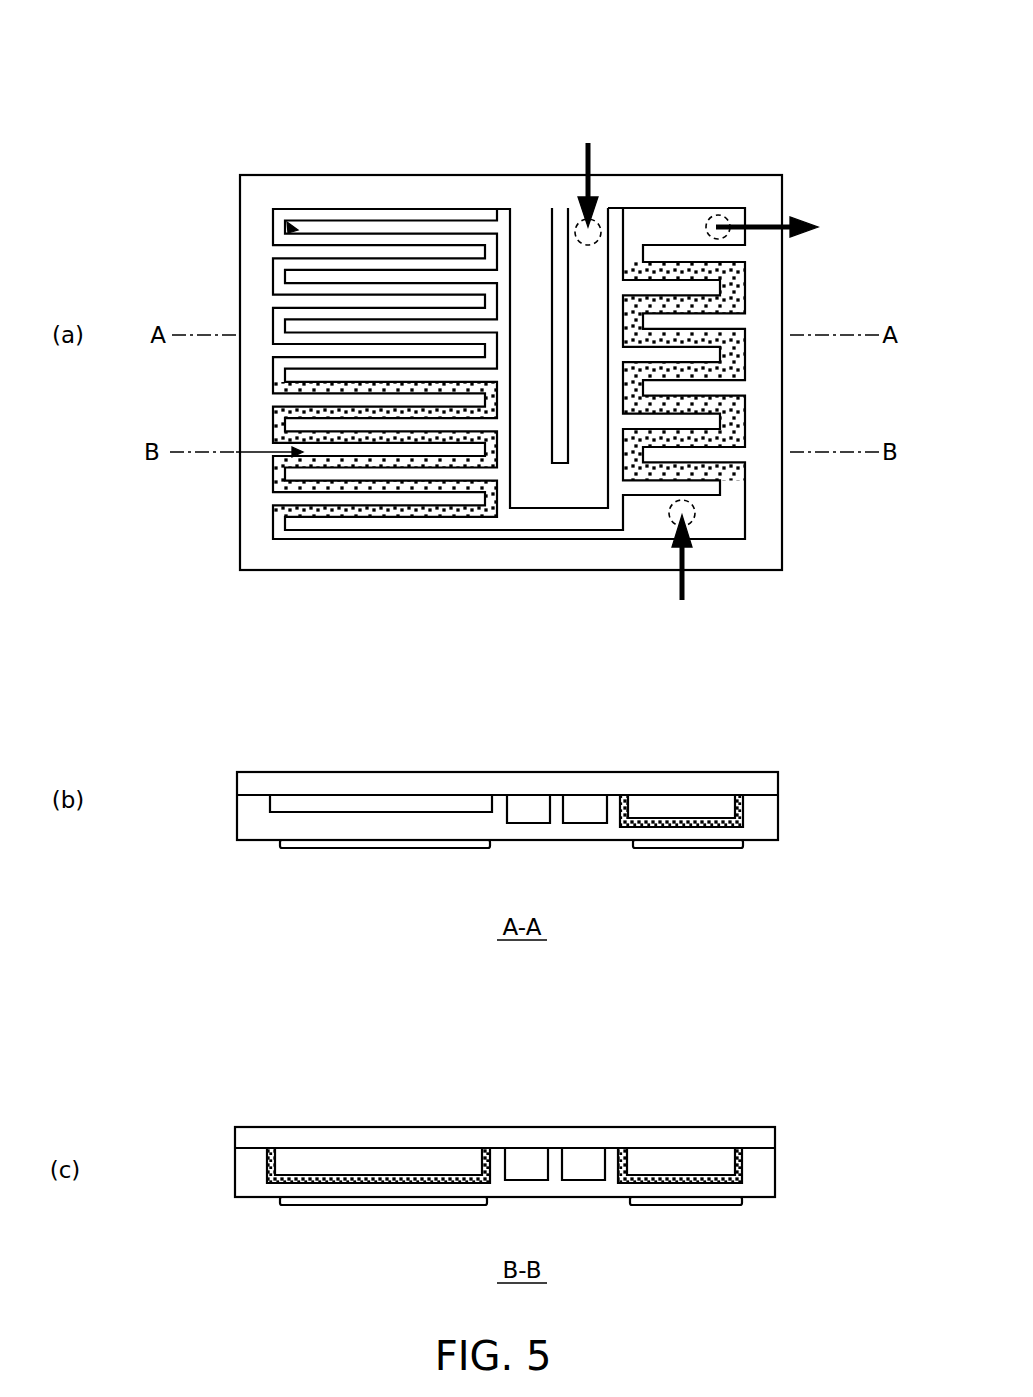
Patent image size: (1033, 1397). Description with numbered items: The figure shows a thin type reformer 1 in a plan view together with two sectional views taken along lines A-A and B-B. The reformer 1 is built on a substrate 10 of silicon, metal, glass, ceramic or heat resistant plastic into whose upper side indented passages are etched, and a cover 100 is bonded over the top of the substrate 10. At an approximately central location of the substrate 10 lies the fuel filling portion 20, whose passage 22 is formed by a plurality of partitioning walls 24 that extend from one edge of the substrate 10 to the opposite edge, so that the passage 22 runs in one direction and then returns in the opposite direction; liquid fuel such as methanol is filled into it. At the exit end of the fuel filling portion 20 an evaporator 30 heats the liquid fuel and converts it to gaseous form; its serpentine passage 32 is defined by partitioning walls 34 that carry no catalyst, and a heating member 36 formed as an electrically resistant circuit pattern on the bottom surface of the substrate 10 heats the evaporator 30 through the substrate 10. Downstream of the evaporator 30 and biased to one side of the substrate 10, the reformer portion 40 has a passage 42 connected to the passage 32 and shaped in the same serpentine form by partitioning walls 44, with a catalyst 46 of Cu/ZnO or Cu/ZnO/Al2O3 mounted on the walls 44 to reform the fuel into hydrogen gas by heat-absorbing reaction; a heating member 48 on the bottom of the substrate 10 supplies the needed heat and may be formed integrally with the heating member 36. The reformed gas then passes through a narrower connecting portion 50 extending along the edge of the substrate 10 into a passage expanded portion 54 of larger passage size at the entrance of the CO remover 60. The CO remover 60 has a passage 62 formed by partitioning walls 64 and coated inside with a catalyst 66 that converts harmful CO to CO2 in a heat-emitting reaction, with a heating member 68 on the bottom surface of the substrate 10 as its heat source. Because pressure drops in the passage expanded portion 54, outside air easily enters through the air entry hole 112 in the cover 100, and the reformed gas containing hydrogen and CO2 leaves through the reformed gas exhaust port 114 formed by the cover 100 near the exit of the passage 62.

The thin type reformer 1 is at (705, 118).
The substrate 10 is at (748, 198).
The fuel filling portion 20 is at (536, 236).
The passage 22 is at (590, 432).
The partitioning walls 24 is at (500, 240).
The evaporator 30 is at (290, 228).
The serpentine passage 32 is at (432, 290).
The partitioning walls 34 is at (348, 277).
The heating member 36 is at (327, 848).
The reformer portion 40 is at (276, 425).
The passage 42 is at (300, 387).
The partitioning walls 44 is at (353, 498).
The catalyst 46 is at (472, 510).
The heating member 48 is at (394, 1205).
The connecting portion 50 is at (568, 540).
The passage expanded portion 54 is at (735, 512).
The CO remover 60 is at (740, 362).
The passage 62 is at (700, 442).
The partitioning walls 64 is at (681, 352).
The catalyst 66 is at (648, 474).
The heating member 68 is at (690, 848).
The cover 100 is at (727, 780).
The air entry hole 112 is at (695, 520).
The reformed gas exhaust port 114 is at (730, 218).